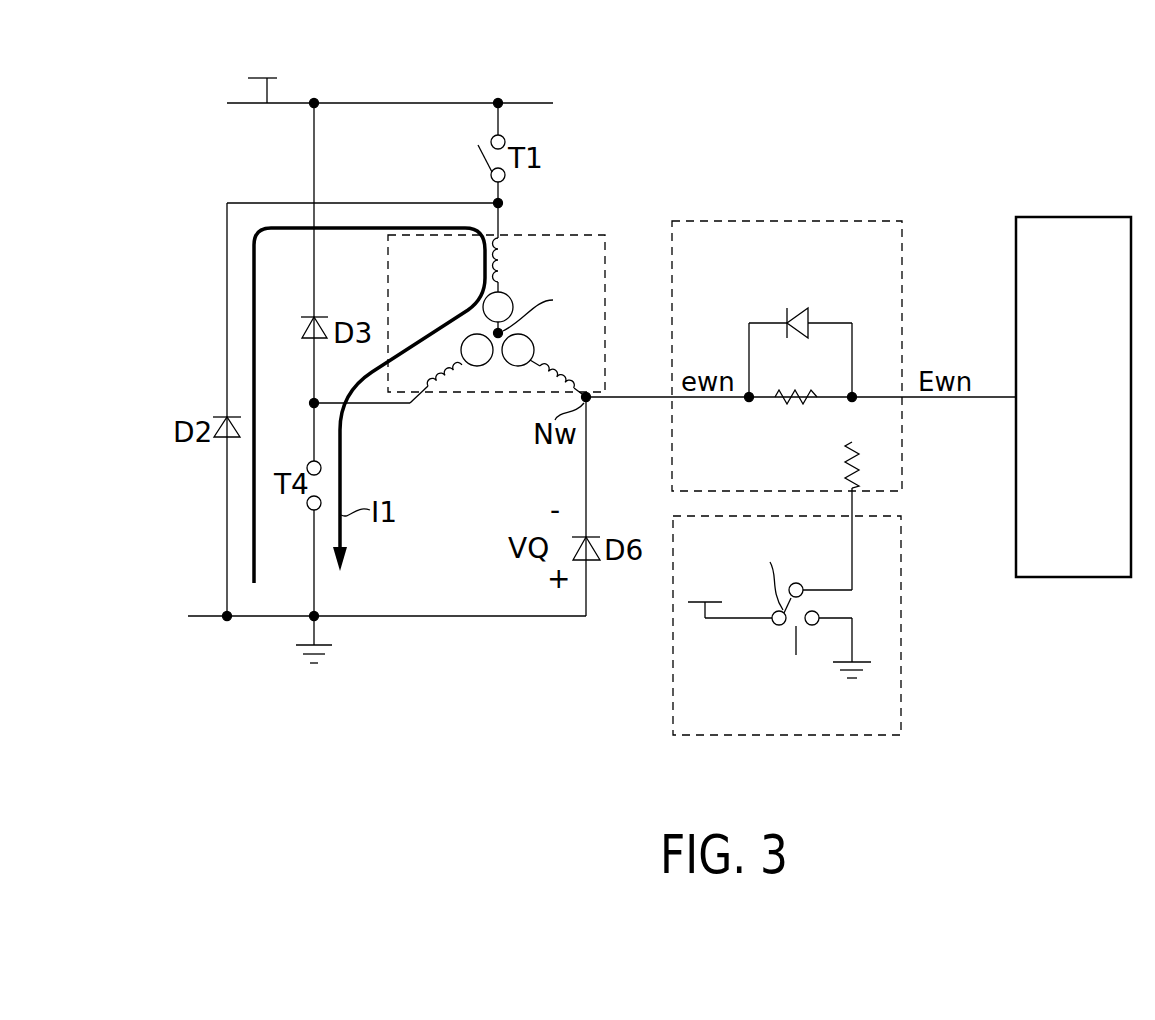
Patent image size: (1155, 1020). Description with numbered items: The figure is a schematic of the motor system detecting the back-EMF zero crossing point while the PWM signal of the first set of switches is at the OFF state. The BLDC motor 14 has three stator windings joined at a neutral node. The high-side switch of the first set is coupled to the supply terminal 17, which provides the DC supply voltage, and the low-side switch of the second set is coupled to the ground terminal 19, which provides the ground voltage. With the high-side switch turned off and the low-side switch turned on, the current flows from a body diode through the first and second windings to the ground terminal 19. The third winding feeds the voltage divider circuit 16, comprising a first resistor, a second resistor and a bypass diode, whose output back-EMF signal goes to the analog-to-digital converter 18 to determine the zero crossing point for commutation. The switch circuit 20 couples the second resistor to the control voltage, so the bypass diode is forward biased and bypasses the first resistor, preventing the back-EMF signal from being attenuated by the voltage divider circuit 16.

The BLDC motor 14 is at (596, 236).
The voltage divider circuit 16 is at (820, 221).
The supply terminal 17 is at (280, 80).
The ADC 18 is at (1070, 217).
The ground terminal 19 is at (322, 644).
The switch circuit 20 is at (901, 610).